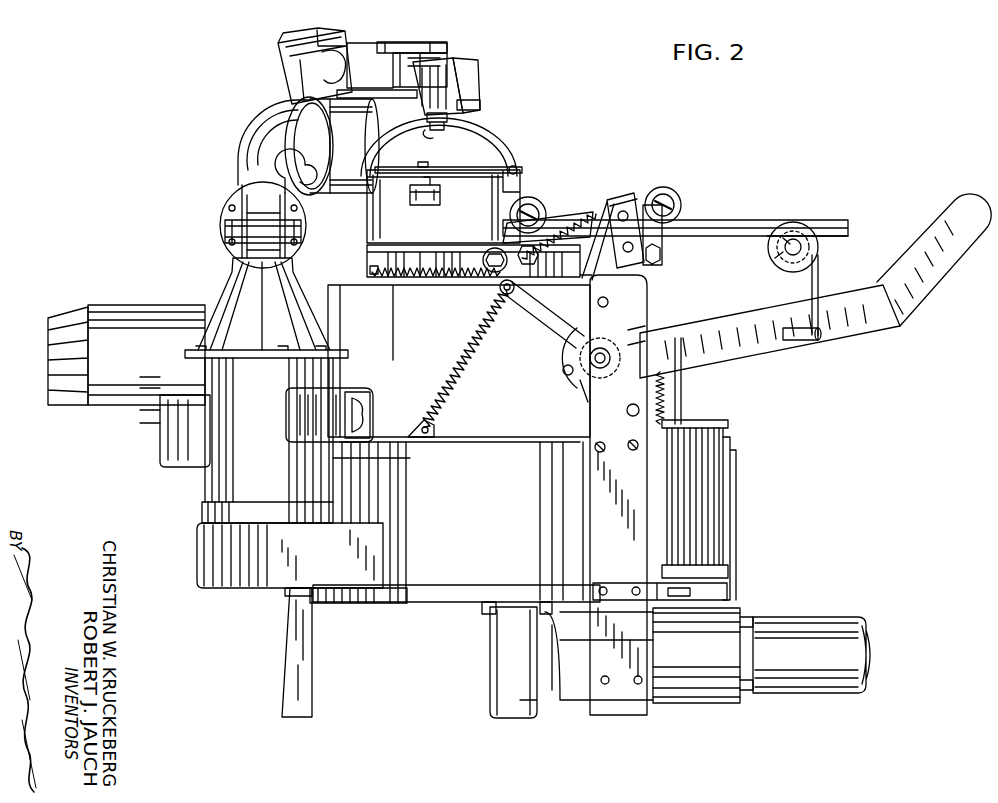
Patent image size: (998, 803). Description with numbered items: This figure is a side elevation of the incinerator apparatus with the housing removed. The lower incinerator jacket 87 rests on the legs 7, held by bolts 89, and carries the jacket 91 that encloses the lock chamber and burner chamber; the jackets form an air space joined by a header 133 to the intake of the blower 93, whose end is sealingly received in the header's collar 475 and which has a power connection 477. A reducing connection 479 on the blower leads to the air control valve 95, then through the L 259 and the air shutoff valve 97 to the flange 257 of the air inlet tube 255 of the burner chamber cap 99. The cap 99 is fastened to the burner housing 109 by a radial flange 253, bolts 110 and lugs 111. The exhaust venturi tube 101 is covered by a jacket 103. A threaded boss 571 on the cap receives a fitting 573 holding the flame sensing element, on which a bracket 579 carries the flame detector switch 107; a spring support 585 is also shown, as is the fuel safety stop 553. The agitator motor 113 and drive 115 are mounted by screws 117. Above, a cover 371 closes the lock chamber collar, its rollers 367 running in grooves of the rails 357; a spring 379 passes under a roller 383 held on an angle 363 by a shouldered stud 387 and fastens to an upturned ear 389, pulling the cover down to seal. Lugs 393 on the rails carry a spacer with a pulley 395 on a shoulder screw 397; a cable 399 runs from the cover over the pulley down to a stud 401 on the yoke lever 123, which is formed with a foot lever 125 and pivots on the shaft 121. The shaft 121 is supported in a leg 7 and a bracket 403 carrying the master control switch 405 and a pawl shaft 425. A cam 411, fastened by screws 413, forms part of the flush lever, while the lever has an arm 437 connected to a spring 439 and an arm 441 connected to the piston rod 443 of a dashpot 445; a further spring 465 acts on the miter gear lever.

The legs 7 is at (302, 684).
The lower incinerator jacket 87 is at (490, 530).
The bolts 89 is at (632, 450).
The jacket 91 is at (493, 401).
The blower 93 is at (265, 460).
The air control valve 95 is at (222, 223).
The air shutoff valve 97 is at (291, 84).
The burner chamber cap 99 is at (480, 142).
The exhaust venturi tube 101 is at (50, 318).
The jacket 103 is at (106, 306).
The flame detector switch 107 is at (456, 60).
The burner housing 109 is at (413, 225).
The bolts 110 is at (428, 166).
The lugs 111 is at (441, 195).
The agitator motor 113 is at (792, 620).
The drive 115 is at (502, 675).
The screws 117 is at (486, 614).
The shaft 121 is at (605, 376).
The yoke lever 123 is at (842, 334).
The foot lever 125 is at (932, 286).
The header 133 is at (337, 553).
The radial flange 253 is at (515, 168).
The air inlet tube 255 is at (448, 159).
The flange 257 is at (362, 196).
The L 259 is at (264, 131).
The rail 357 is at (826, 228).
The angles 363 is at (382, 254).
The rollers 367 is at (534, 203).
The cover 371 is at (565, 216).
The spring 379 is at (410, 280).
The roller 383 is at (488, 250).
The shouldered stud 387 is at (485, 258).
The upturned ear 389 is at (378, 268).
The lugs 393 is at (781, 263).
The pulley 395 is at (781, 249).
The shoulder screw 397 is at (793, 238).
The cable 399 is at (711, 222).
The stud 401 is at (793, 341).
The bracket 403 is at (597, 243).
The master control switch 405 is at (612, 200).
The cam 411 is at (578, 401).
The screws 413 is at (565, 374).
The shaft 425 is at (627, 411).
The arm 437 is at (530, 312).
The spring 439 is at (462, 356).
The arm 441 is at (644, 331).
The piston rod 443 is at (684, 406).
The dashpot 445 is at (702, 499).
The spring 465 is at (672, 391).
The collar 475 is at (273, 521).
The power connection 477 is at (329, 415).
The reducing connection 479 is at (246, 296).
The fuel safety stop 553 is at (392, 41).
The threaded boss 571 is at (427, 134).
The fitting 573 is at (450, 123).
The bracket 579 is at (466, 82).
The spring support 585 is at (480, 96).